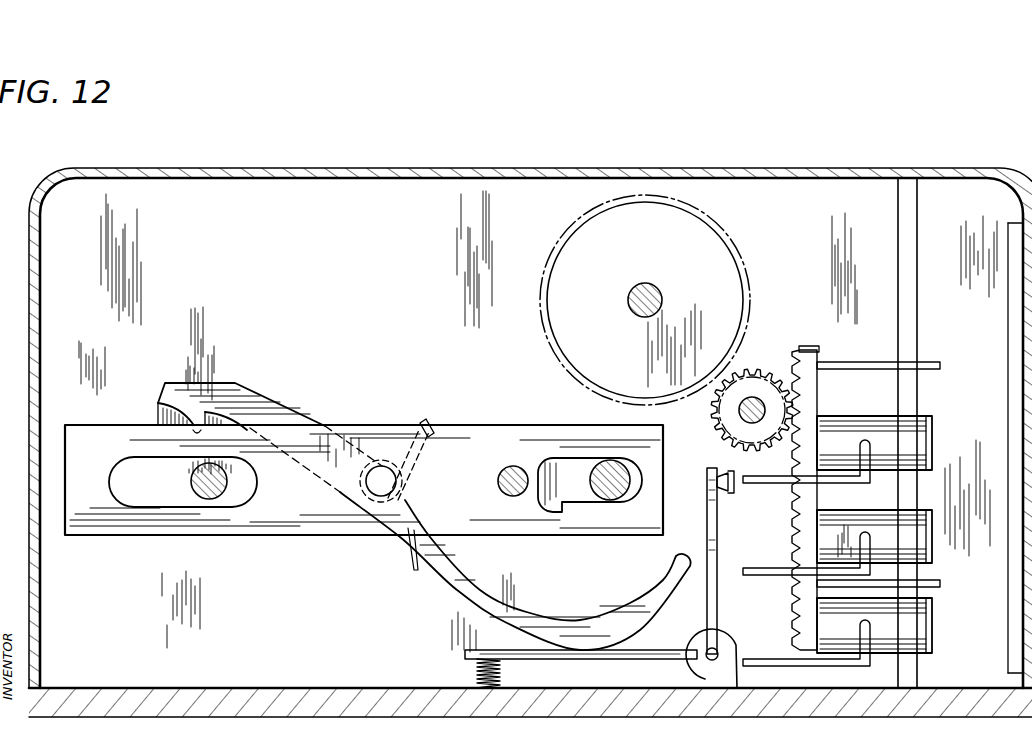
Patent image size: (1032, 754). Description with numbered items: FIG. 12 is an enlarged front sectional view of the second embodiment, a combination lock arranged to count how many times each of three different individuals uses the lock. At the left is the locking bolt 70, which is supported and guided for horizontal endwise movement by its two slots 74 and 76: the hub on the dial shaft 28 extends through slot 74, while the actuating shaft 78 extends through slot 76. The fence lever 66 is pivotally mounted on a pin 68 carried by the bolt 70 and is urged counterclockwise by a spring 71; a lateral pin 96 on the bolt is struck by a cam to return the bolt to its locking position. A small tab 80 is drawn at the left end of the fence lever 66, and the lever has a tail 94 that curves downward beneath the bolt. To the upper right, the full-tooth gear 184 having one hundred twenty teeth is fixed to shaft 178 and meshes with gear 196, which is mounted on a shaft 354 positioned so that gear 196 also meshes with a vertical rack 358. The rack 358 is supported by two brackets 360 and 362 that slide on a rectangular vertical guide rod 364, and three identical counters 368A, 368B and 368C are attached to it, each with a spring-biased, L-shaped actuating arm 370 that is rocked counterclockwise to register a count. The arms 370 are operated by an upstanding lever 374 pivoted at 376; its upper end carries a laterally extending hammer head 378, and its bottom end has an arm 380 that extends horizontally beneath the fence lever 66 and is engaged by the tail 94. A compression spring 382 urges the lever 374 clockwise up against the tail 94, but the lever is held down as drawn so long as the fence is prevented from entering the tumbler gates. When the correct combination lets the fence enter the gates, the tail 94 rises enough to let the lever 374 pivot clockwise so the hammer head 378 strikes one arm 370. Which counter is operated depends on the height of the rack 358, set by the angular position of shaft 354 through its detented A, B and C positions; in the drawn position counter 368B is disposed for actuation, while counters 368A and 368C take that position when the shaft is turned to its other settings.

The rotatable shaft 28 is at (207, 490).
The fence lever 66 is at (297, 406).
The pin 68 is at (382, 475).
The locking bolt 70 is at (257, 538).
The spring 71 is at (430, 422).
The slot 74 is at (133, 500).
The slot 76 is at (590, 513).
The actuating shaft 78 is at (618, 502).
The tab 80 is at (192, 425).
The tail 94 is at (460, 602).
The lateral pin 96 is at (515, 468).
The shaft 178 is at (629, 298).
The full-tooth gear 184 is at (745, 272).
The gear 196 is at (770, 370).
The shaft 354 is at (758, 389).
The rack 358 is at (814, 348).
The bracket 360 is at (870, 362).
The bracket 362 is at (940, 583).
The rectangular vertical guide rod 364 is at (917, 292).
The counter 368A is at (932, 540).
The counter 368B is at (934, 438).
The counter 368C is at (932, 627).
The actuating arm 370 is at (760, 484).
The upstanding lever 374 is at (717, 524).
The pivot 376 is at (712, 690).
The hammer head 378 is at (722, 488).
The arm 380 is at (568, 659).
The compression spring 382 is at (476, 669).